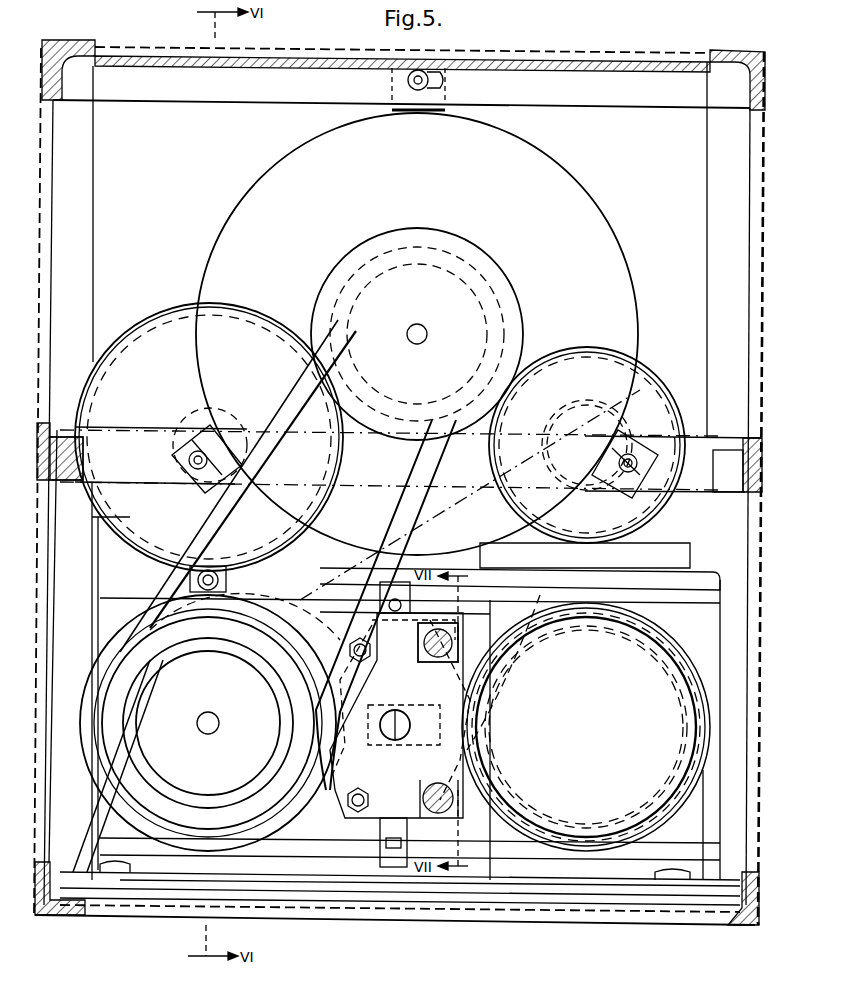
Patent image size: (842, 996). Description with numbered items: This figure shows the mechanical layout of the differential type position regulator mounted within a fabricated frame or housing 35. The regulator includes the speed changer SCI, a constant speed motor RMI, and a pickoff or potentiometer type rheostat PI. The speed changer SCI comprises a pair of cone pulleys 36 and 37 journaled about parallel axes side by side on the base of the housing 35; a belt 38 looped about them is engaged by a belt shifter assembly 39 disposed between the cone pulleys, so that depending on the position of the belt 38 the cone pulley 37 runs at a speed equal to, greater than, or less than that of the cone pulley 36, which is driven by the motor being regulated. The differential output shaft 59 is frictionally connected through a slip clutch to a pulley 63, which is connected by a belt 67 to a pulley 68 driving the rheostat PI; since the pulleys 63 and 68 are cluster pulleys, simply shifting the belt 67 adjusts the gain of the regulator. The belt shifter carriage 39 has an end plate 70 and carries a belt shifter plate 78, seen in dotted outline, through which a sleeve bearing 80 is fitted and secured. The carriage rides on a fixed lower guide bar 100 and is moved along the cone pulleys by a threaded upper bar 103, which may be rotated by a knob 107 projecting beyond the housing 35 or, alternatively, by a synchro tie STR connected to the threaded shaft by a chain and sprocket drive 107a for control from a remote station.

The housing 35 is at (740, 928).
The cone pulley 36 is at (680, 665).
The cone pulley 37 is at (90, 746).
The belt 38 is at (273, 855).
The belt shifter assembly 39 is at (378, 864).
The differential output shaft 59 is at (197, 722).
The pulley 63 is at (104, 677).
The belt 67 is at (292, 406).
The pulley 68 is at (452, 242).
The end plate 70 is at (392, 710).
The plate 78 is at (342, 782).
The sleeve bearing 80 is at (392, 746).
The lower bar 100 is at (437, 813).
The threaded bar 103 is at (428, 655).
The knob 107 is at (441, 674).
The chain and sprocket drive 107a is at (470, 490).
The pickoff PI is at (606, 230).
The constant speed motor RMI is at (158, 312).
The synchro tie STR is at (682, 364).
The speed changer SCI is at (645, 828).